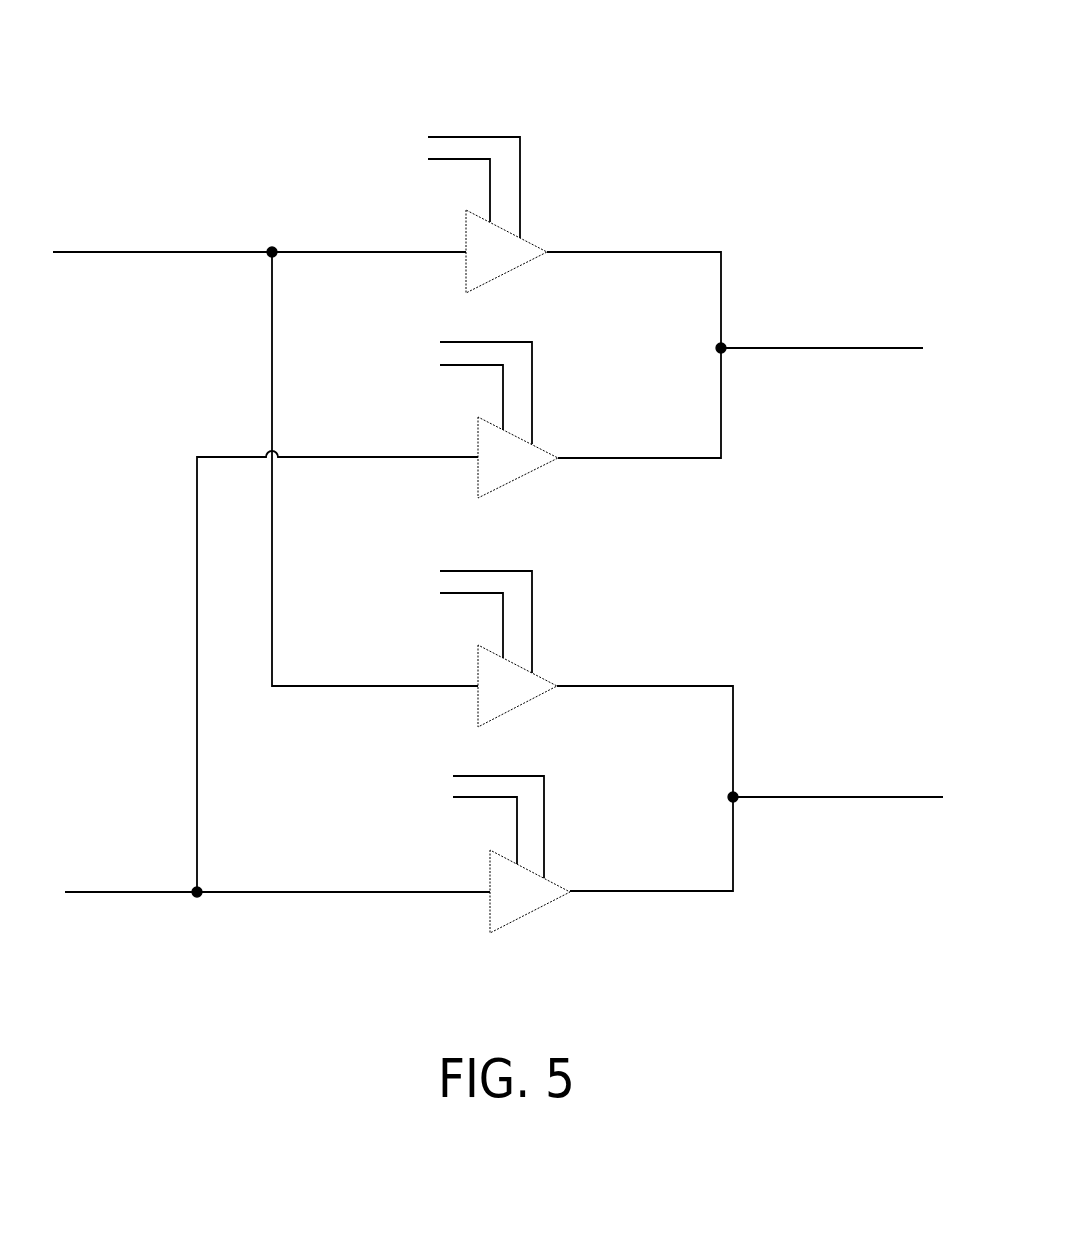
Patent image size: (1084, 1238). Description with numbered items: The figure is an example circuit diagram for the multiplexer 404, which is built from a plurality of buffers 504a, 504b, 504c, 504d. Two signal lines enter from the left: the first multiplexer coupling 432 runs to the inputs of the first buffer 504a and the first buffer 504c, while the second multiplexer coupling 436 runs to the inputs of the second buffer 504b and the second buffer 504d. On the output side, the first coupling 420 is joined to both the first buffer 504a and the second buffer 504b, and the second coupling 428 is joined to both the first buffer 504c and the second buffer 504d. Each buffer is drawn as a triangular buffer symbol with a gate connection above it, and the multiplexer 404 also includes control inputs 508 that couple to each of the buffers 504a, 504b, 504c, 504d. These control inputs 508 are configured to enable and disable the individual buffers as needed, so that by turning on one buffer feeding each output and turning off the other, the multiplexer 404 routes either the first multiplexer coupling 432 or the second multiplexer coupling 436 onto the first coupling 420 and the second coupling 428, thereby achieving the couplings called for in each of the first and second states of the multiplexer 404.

The multiplexer 404 is at (755, 133).
The first coupling 420 is at (850, 348).
The second coupling 428 is at (843, 797).
The first multiplexer coupling 432 is at (173, 252).
The second multiplexer coupling 436 is at (165, 892).
The first buffer 504a is at (528, 242).
The second buffer 504b is at (542, 446).
The first buffer 504c is at (542, 675).
The second buffer 504d is at (552, 882).
The control inputs 508 is at (473, 137).